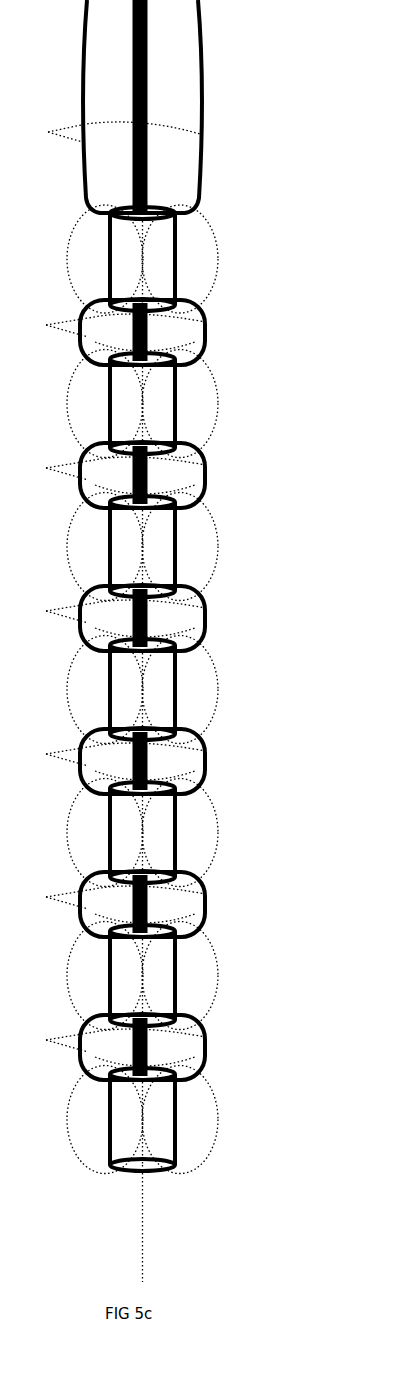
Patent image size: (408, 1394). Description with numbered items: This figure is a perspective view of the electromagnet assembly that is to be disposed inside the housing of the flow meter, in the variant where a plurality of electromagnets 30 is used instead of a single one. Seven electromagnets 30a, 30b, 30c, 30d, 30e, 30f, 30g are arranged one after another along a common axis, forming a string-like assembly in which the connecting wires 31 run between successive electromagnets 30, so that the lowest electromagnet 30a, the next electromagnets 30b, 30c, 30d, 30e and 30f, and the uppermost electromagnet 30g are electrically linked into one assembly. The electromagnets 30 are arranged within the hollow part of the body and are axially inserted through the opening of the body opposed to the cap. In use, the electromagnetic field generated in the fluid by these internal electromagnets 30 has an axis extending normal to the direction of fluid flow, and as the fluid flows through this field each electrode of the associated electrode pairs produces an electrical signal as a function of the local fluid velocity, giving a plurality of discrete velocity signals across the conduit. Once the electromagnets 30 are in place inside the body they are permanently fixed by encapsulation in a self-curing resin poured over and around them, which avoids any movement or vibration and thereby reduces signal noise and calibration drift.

The electromagnet 30 is at (165, 1150).
The electromagnet 30a is at (162, 1123).
The electromagnet 30b is at (162, 980).
The electromagnet 30c is at (162, 837).
The electromagnet 30d is at (162, 694).
The electromagnet 30e is at (162, 551).
The electromagnet 30f is at (162, 408).
The electromagnet 30g is at (162, 265).
The connecting wires 31 is at (114, 600).